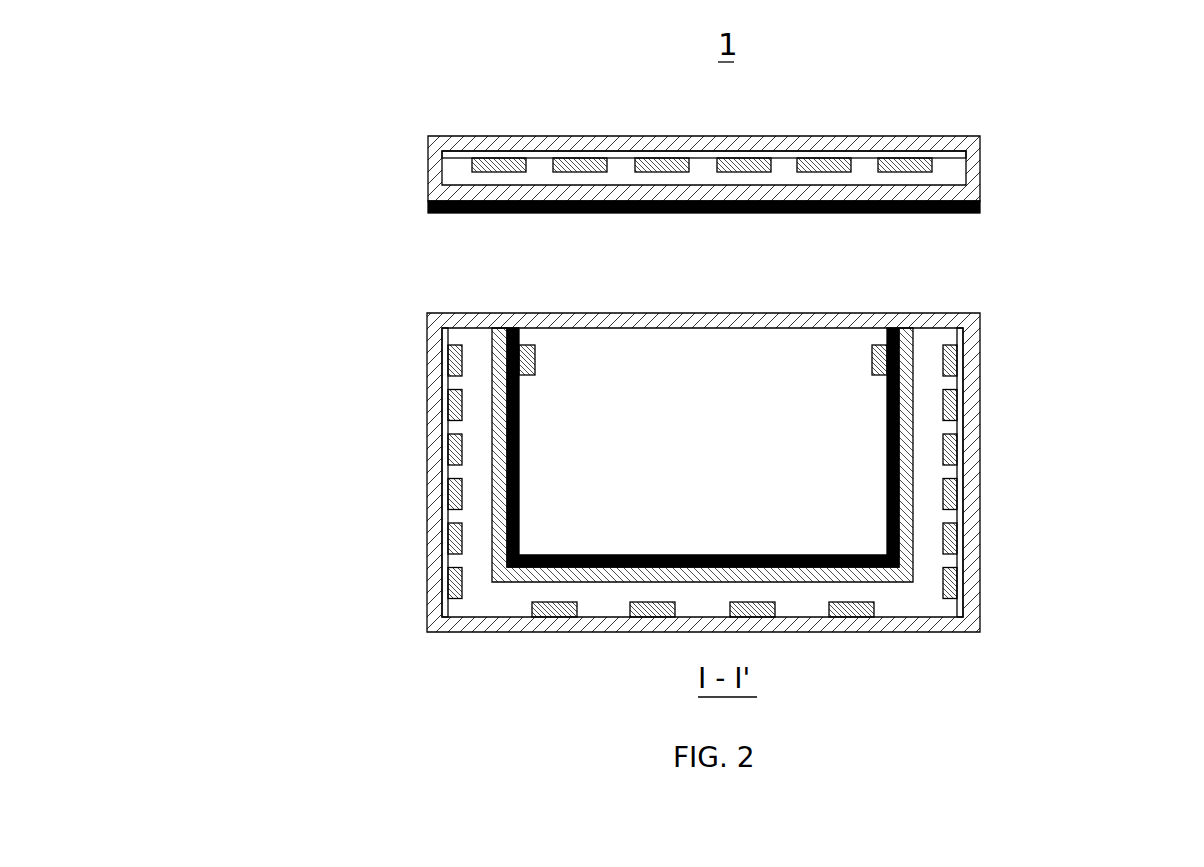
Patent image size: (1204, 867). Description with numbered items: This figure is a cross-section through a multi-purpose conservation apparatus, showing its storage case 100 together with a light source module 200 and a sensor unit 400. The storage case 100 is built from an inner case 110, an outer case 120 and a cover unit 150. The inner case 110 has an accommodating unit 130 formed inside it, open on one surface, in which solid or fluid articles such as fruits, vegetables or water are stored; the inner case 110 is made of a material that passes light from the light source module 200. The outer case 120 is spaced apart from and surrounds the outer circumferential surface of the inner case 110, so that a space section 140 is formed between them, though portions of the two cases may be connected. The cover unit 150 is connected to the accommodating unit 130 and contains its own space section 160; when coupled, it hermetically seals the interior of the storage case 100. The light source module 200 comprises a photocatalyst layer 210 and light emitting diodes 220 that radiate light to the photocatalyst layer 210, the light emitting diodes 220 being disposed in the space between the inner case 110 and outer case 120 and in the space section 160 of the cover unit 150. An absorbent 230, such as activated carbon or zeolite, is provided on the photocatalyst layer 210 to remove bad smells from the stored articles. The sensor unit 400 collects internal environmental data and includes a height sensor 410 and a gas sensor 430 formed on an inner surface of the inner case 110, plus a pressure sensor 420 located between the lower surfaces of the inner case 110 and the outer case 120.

The storage case 100 is at (1108, 168).
The inner case 110 is at (905, 424).
The outer case 120 is at (975, 478).
The accommodating unit 130 is at (829, 526).
The space section 140 is at (937, 529).
The cover unit 150 is at (975, 168).
The space section 160 is at (550, 178).
The light source module 200 is at (321, 410).
The photocatalyst layer 210 is at (428, 209).
The light emitting diode 220 is at (823, 165).
The absorbent 230 is at (521, 493).
The sensor unit 400 is at (777, 400).
The height sensor 410 is at (535, 362).
The pressure sensor 420 is at (752, 605).
The gas sensor 430 is at (872, 362).